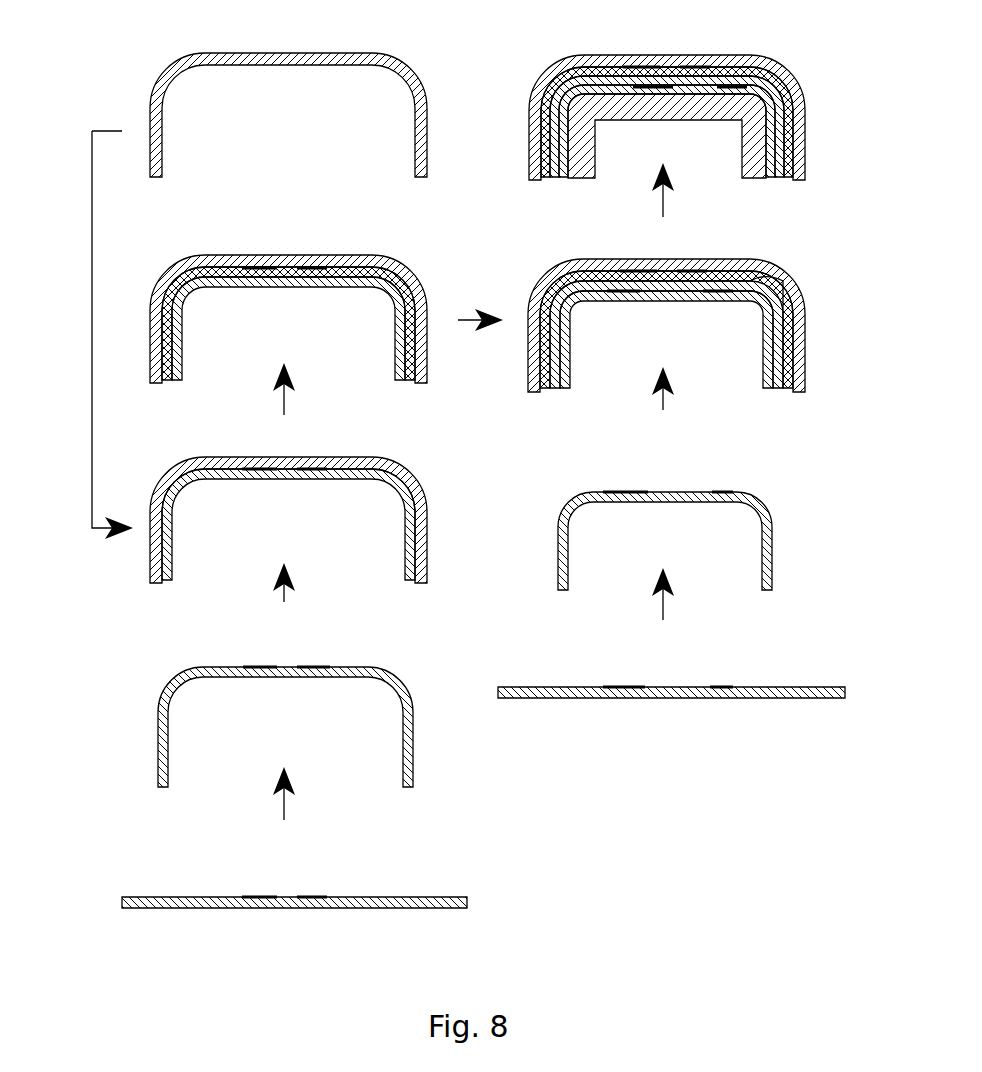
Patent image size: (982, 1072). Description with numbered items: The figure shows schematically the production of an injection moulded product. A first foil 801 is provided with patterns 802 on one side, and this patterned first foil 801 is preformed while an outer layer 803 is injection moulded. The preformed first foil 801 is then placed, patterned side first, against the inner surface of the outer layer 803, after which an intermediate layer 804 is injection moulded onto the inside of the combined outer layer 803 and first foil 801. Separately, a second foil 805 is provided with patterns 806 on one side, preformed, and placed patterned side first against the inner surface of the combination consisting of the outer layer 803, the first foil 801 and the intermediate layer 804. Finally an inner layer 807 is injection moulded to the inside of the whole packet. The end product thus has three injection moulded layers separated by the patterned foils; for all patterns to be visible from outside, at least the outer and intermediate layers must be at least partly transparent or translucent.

The first foil 801 is at (221, 280).
The patterns 802 is at (265, 267).
The outer layer 803 is at (406, 80).
The intermediate layer 804 is at (333, 283).
The second foil 805 is at (593, 298).
The patterns 806 is at (716, 293).
The inner layer 807 is at (620, 122).